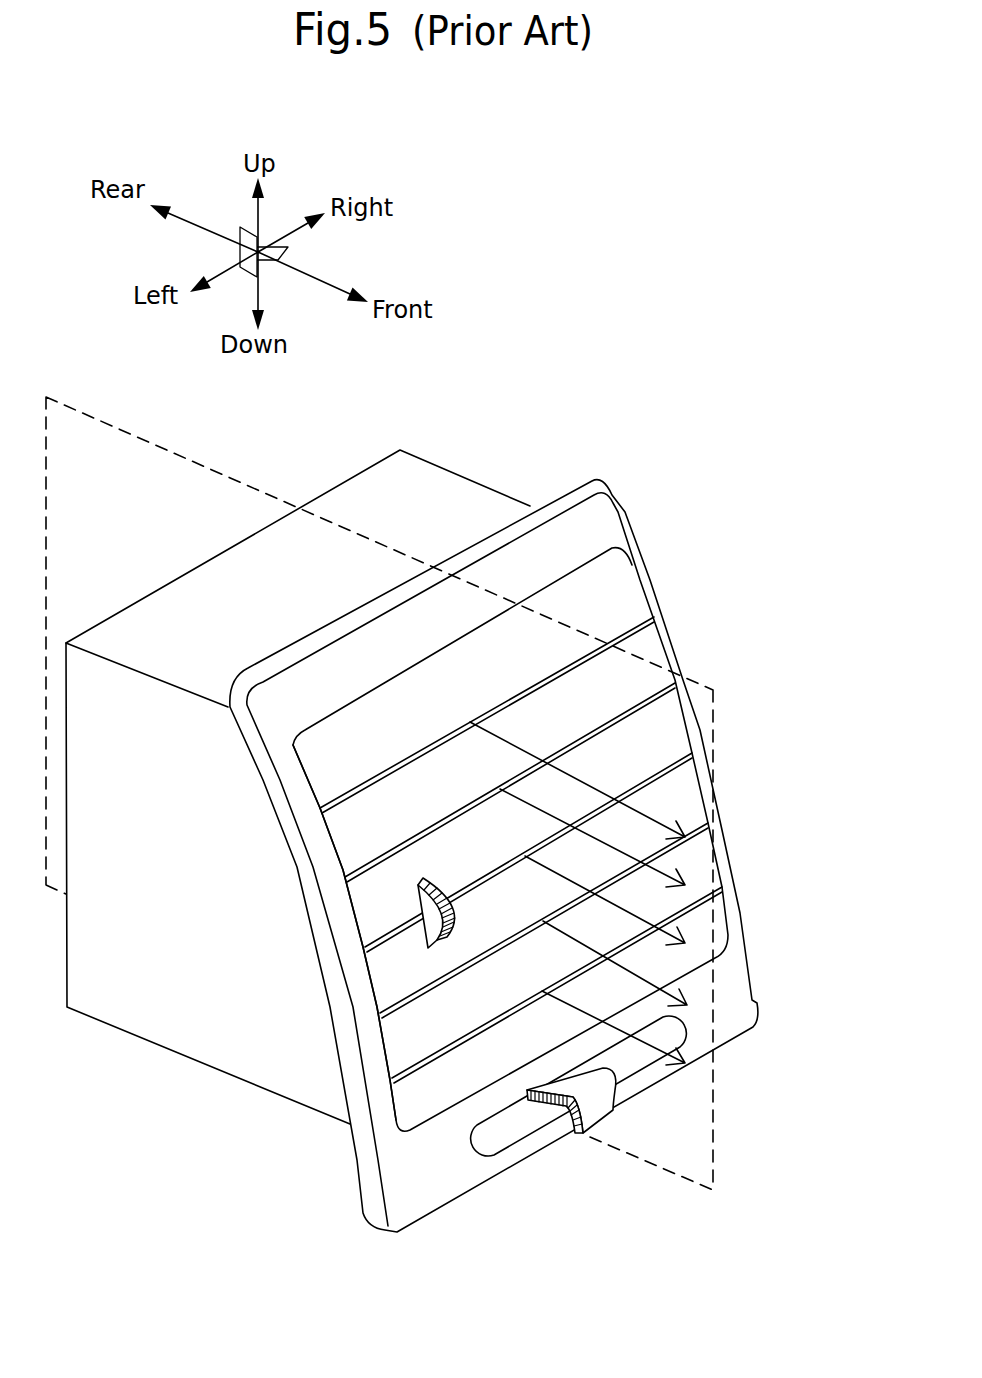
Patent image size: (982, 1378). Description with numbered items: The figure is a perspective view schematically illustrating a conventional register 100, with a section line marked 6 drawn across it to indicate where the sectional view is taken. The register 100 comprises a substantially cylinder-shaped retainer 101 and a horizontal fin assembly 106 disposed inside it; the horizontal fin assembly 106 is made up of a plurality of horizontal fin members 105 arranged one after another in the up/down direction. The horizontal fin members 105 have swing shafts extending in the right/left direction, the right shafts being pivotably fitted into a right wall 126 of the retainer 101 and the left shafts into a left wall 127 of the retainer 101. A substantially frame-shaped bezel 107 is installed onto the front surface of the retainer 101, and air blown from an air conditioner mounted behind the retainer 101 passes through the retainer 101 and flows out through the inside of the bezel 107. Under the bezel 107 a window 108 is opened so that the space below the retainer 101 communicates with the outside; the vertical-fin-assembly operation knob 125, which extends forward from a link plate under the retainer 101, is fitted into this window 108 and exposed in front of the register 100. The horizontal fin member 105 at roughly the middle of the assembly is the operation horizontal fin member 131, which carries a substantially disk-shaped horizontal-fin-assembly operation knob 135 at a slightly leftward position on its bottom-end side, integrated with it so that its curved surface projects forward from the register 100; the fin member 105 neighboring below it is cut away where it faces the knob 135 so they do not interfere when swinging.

The section line of FIG. 6 is at (103, 420).
The register 100 is at (606, 436).
The retainer 101 is at (413, 475).
The horizontal fin members 105 is at (607, 587).
The horizontal fin assembly 106 is at (687, 602).
The bezel 107 is at (724, 876).
The window 108 is at (493, 1127).
The vertical-fin-assembly operation knob 125 is at (573, 1077).
The right wall 126 is at (508, 490).
The left wall 127 is at (140, 1010).
The operation horizontal fin member 131 is at (668, 735).
The horizontal-fin-assembly operation knob 135 is at (424, 905).